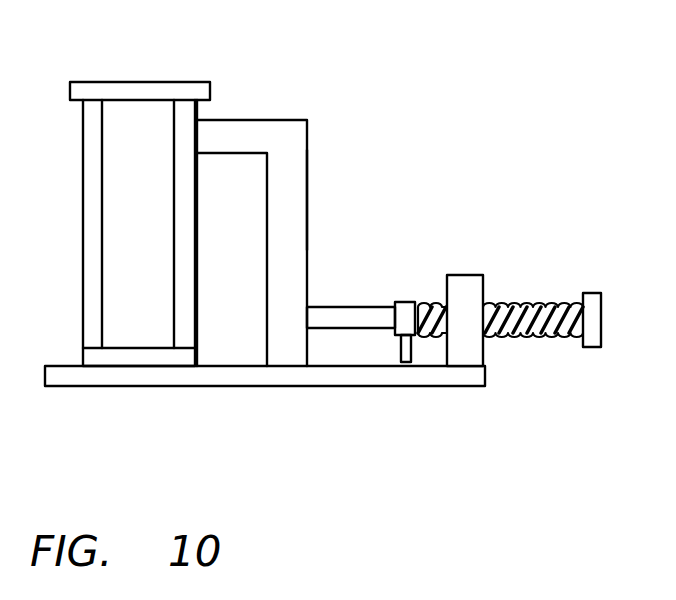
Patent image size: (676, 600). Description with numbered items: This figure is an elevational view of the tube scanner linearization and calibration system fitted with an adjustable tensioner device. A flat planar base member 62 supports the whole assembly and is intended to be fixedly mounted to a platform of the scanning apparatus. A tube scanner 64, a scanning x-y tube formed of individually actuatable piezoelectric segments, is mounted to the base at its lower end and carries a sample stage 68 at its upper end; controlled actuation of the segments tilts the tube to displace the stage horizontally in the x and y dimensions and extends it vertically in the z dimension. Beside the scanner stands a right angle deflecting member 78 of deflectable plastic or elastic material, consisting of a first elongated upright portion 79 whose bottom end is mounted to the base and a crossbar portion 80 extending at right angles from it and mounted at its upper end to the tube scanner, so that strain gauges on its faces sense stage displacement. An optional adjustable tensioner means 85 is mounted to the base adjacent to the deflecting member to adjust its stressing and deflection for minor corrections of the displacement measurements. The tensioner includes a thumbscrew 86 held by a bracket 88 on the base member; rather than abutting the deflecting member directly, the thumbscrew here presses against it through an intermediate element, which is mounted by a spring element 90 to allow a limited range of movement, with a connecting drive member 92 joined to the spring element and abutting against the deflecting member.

The base member 62 is at (45, 372).
The tube scanner 64 is at (83, 219).
The sample stage 68 is at (155, 82).
The right angle deflecting member 78 is at (318, 200).
The first elongated upright portion 79 is at (267, 237).
The crossbar portion 80 is at (288, 120).
The adjustable tensioner means 85 is at (550, 194).
The thumbscrew 86 is at (527, 333).
The bracket 88 is at (463, 275).
The spring element 90 is at (447, 360).
The connecting drive member 92 is at (373, 307).